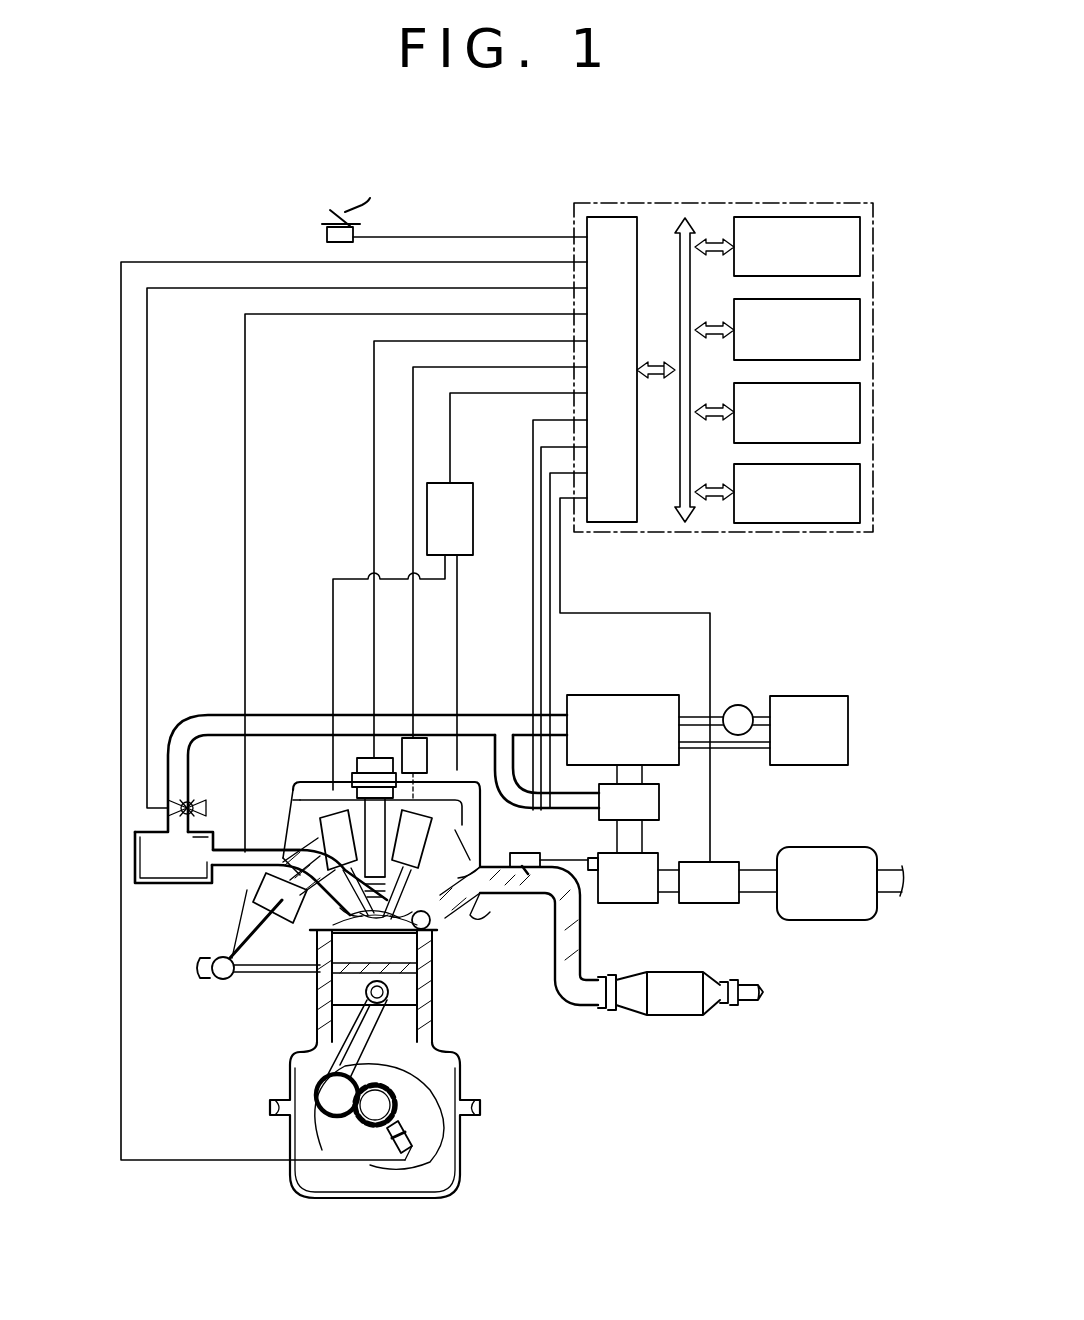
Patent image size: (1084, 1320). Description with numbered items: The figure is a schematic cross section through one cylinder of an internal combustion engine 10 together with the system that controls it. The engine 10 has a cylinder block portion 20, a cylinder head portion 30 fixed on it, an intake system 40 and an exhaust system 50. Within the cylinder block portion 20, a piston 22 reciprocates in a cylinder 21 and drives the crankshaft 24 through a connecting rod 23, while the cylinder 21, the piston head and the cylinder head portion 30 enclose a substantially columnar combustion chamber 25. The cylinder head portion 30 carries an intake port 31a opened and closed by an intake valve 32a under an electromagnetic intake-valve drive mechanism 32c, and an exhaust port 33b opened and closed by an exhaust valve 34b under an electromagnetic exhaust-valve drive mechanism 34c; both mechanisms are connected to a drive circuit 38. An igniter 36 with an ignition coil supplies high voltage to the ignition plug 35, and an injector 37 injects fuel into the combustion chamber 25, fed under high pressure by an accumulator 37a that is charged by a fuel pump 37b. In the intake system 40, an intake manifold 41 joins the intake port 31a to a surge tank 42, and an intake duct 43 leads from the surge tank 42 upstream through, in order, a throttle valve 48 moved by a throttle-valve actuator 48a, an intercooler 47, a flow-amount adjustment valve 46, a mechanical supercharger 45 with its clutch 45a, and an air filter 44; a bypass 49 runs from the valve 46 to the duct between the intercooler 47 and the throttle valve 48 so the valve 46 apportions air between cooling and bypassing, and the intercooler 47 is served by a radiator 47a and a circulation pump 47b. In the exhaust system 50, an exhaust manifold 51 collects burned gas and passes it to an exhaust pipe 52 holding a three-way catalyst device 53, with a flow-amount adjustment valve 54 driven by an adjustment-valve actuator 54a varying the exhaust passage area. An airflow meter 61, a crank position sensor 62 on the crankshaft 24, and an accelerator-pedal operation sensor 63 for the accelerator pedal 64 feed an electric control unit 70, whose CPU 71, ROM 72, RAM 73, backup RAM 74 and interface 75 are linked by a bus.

The internal combustion engine 10 is at (205, 1076).
The cylinder block portion 20 is at (359, 939).
The cylinder 21 is at (320, 975).
The piston 22 is at (340, 998).
The connecting rod 23 is at (352, 1025).
The crankshaft 24 is at (335, 1105).
The combustion chamber 25 is at (383, 961).
The cylinder head portion 30 is at (326, 780).
The intake port 31a is at (287, 855).
The intake valve 32a is at (320, 935).
The electromagnetic intake-valve drive mechanism 32c is at (293, 792).
The exhaust port 33b is at (480, 868).
The exhaust valve 34b is at (425, 922).
The electromagnetic exhaust-valve drive mechanism 34c is at (420, 790).
The ignition plug 35 is at (375, 1087).
The igniter 36 is at (366, 757).
The injector 37 is at (246, 895).
The accumulator 37a is at (218, 985).
The fuel pump 37b is at (425, 740).
The drive circuit 38 is at (450, 483).
The intake system 40 is at (208, 700).
The intake manifold 41 is at (230, 866).
The surge tank 42 is at (160, 883).
The intake duct 43 is at (283, 714).
The air filter 44 is at (832, 847).
The mechanical supercharger 45 is at (646, 904).
The mechanical supercharger clutch 45a is at (592, 870).
The flow-amount adjustment valve 46 is at (660, 808).
The intercooler 47 is at (640, 695).
The radiator 47a is at (815, 696).
The circulation pump 47b is at (738, 705).
The throttle valve 48 is at (200, 806).
The throttle-valve actuator 48a is at (190, 801).
The bypass 49 is at (550, 815).
The exhaust system 50 is at (571, 1022).
The exhaust manifold 51 is at (493, 895).
The exhaust pipe 52 is at (553, 965).
The three-way catalyst device 53 is at (676, 972).
The flow-amount adjustment valve 54 is at (520, 895).
The adjustment-valve actuator 54a is at (513, 863).
The airflow meter 61 is at (720, 858).
The crank position sensor 62 is at (413, 1137).
The accelerator-pedal operation sensor 63 is at (327, 237).
The accelerator pedal 64 is at (332, 211).
The electric control unit 70 is at (805, 203).
The CPU 71 is at (862, 247).
The ROM 72 is at (862, 330).
The RAM 73 is at (862, 412).
The backup RAM 74 is at (862, 492).
The interface 75 is at (603, 217).